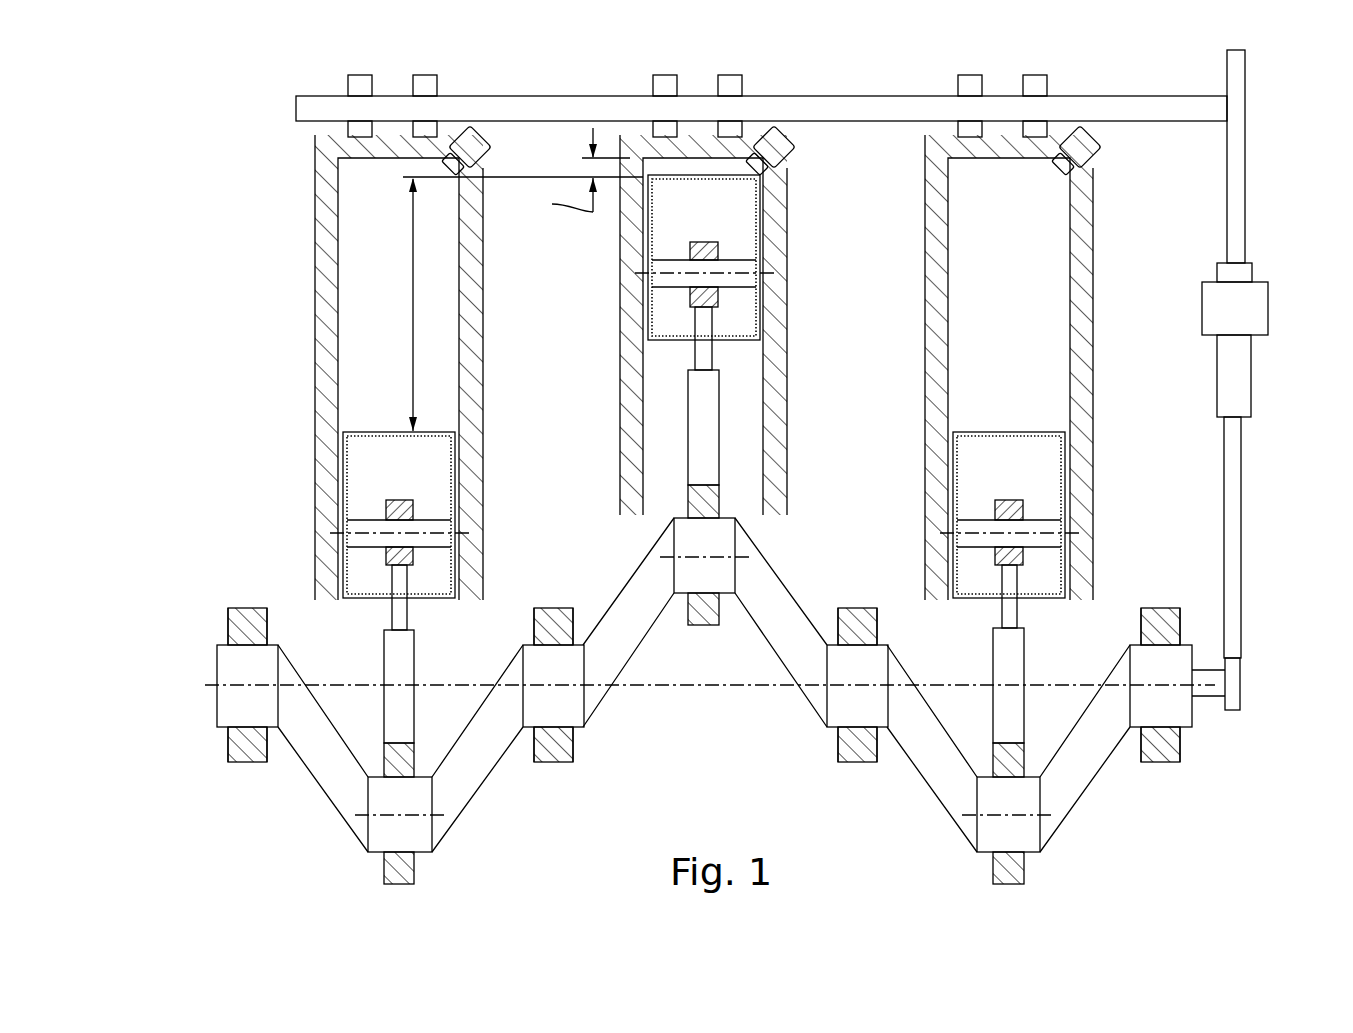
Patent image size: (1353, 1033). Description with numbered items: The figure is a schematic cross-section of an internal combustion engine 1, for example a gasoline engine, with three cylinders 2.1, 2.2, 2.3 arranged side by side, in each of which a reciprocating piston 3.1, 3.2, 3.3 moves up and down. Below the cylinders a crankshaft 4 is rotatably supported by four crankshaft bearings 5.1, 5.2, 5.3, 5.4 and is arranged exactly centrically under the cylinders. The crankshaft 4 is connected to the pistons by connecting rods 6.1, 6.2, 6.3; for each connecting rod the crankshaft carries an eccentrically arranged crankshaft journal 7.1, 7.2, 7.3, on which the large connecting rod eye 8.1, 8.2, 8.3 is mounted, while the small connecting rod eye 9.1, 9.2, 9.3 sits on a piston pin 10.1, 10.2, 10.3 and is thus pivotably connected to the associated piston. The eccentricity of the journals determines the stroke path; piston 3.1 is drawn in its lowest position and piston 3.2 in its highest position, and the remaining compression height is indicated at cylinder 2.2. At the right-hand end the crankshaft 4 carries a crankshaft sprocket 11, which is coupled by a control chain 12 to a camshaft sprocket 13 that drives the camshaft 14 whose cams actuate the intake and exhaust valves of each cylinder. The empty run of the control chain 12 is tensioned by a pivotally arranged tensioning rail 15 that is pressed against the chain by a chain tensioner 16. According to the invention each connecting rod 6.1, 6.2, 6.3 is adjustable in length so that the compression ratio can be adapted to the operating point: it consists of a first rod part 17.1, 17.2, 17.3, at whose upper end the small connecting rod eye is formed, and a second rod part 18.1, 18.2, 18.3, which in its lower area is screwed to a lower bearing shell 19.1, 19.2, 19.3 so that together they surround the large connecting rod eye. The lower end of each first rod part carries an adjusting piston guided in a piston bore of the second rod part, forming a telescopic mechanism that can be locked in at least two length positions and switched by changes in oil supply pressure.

The internal combustion engine 1 is at (828, 70).
The cylinder 2.1 is at (312, 290).
The cylinder 2.2 is at (622, 362).
The cylinder 2.3 is at (927, 270).
The reciprocating piston 3.1 is at (397, 515).
The reciprocating piston 3.2 is at (709, 257).
The reciprocating piston 3.3 is at (1011, 515).
The crankshaft 4 is at (710, 716).
The crankshaft bearing 5.1 is at (218, 730).
The crankshaft bearing 5.2 is at (586, 738).
The crankshaft bearing 5.3 is at (827, 737).
The crankshaft bearing 5.4 is at (1194, 735).
The connecting rod 6.1 is at (370, 669).
The connecting rod 6.2 is at (715, 412).
The connecting rod 6.3 is at (1010, 671).
The crankshaft journal 7.1 is at (424, 840).
The crankshaft journal 7.2 is at (688, 585).
The crankshaft journal 7.3 is at (1025, 840).
The large connecting rod eye 8.1 is at (409, 881).
The large connecting rod eye 8.2 is at (717, 656).
The large connecting rod eye 8.3 is at (1017, 878).
The small connecting rod eye 9.1 is at (400, 540).
The small connecting rod eye 9.2 is at (702, 275).
The small connecting rod eye 9.3 is at (1005, 540).
The piston pin 10.1 is at (362, 541).
The piston pin 10.2 is at (760, 280).
The piston pin 10.3 is at (1055, 540).
The crankshaft sprocket 11 is at (1243, 683).
The control chain 12 is at (1238, 552).
The camshaft sprocket 13 is at (1246, 80).
The camshaft 14 is at (1140, 105).
The tensioning rail 15 is at (1248, 378).
The chain tensioner 16 is at (1266, 305).
The first rod part 17.1 is at (398, 590).
The first rod part 17.2 is at (705, 350).
The first rod part 17.3 is at (1012, 612).
The second rod part 18.1 is at (416, 660).
The second rod part 18.2 is at (710, 400).
The second rod part 18.3 is at (1020, 650).
The lower bearing shell 19.1 is at (400, 878).
The lower bearing shell 19.2 is at (705, 600).
The lower bearing shell 19.3 is at (1012, 878).